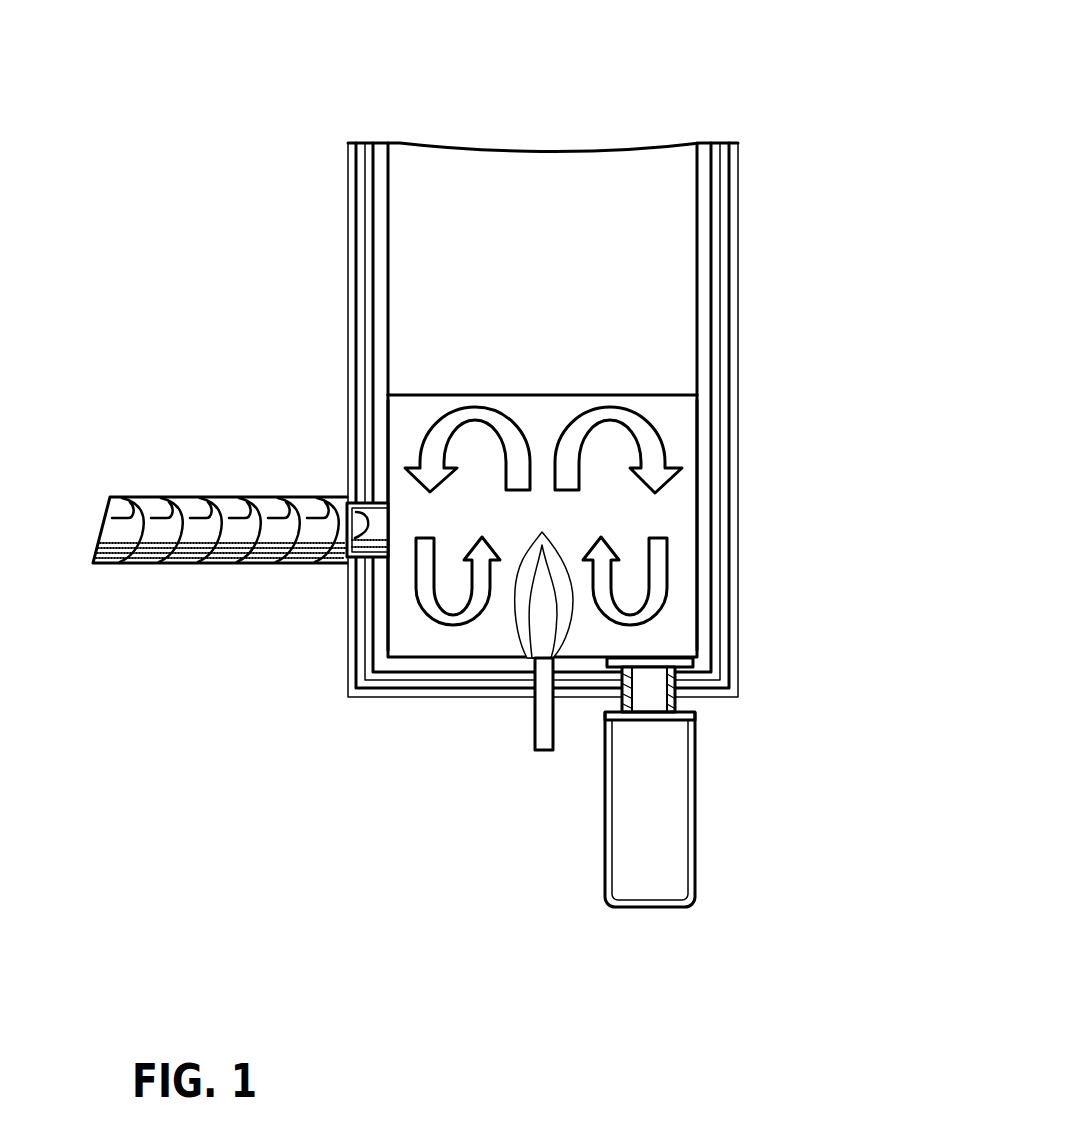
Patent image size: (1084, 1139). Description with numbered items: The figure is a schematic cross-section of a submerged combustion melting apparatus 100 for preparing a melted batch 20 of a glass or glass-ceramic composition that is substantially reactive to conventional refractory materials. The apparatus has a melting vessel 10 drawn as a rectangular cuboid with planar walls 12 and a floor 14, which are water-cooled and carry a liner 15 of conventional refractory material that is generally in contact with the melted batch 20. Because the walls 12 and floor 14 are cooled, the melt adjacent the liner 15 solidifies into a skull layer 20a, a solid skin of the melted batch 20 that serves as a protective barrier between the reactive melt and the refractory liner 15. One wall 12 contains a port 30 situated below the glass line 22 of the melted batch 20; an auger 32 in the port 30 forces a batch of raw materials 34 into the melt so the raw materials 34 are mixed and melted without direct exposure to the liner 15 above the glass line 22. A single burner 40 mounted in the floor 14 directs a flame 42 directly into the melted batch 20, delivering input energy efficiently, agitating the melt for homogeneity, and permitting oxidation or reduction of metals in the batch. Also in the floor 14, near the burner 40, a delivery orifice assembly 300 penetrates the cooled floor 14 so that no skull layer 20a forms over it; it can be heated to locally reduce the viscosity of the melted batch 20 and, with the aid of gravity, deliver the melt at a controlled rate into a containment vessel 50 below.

The submerged combustion melting apparatus 100 is at (837, 114).
The melting vessel 10 is at (626, 209).
The walls 12 is at (365, 596).
The floor 14 is at (718, 696).
The liner 15 is at (381, 201).
The melted batch 20 is at (417, 418).
The skull layer 20a is at (394, 437).
The glass line 22 is at (446, 394).
The port 30 is at (360, 503).
The auger 32 is at (162, 494).
The batch of raw materials 34 is at (346, 566).
The burner 40 is at (540, 737).
The flame 42 is at (528, 623).
The containment vessel 50 is at (604, 878).
The delivery orifice assembly 300 is at (687, 702).